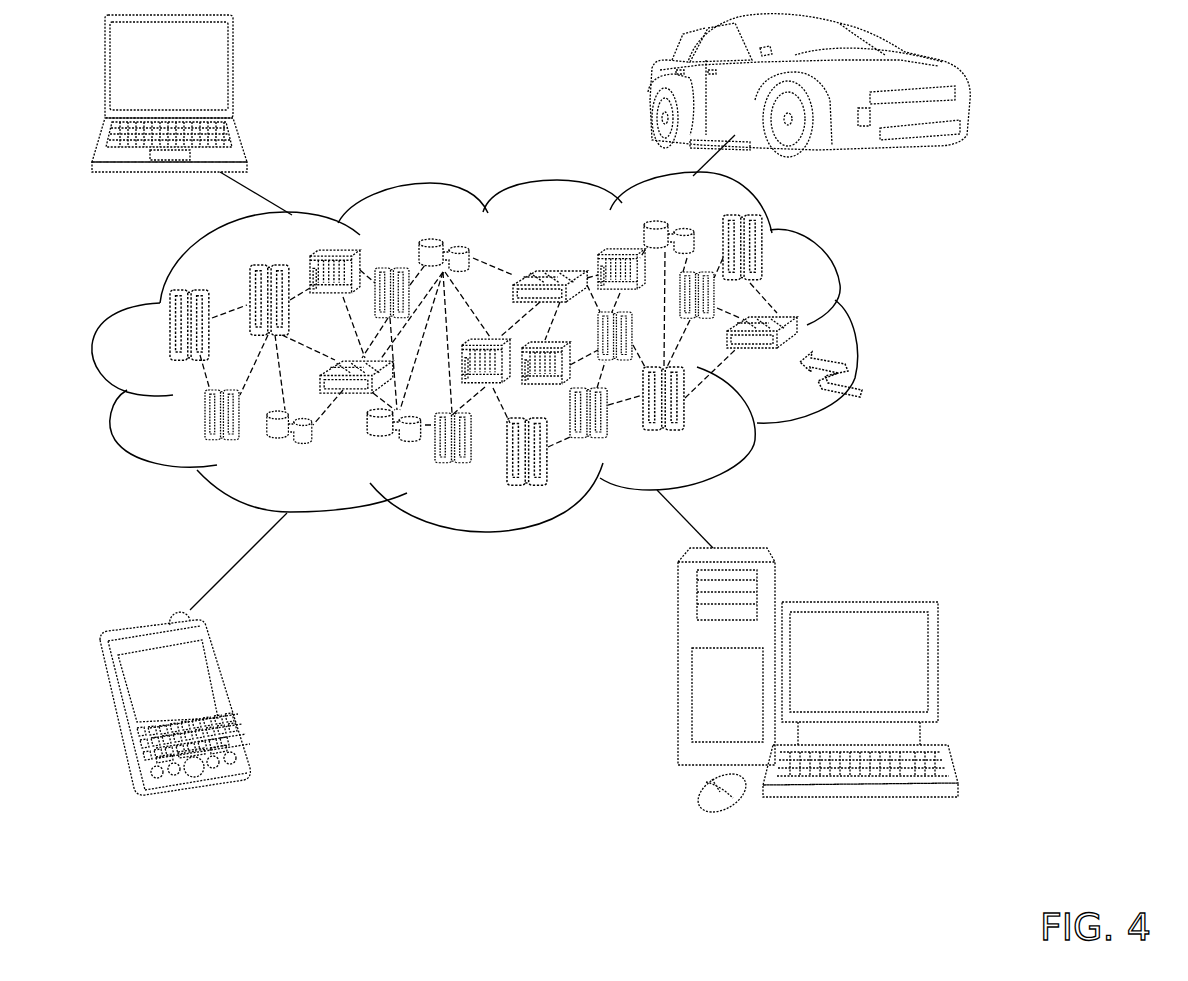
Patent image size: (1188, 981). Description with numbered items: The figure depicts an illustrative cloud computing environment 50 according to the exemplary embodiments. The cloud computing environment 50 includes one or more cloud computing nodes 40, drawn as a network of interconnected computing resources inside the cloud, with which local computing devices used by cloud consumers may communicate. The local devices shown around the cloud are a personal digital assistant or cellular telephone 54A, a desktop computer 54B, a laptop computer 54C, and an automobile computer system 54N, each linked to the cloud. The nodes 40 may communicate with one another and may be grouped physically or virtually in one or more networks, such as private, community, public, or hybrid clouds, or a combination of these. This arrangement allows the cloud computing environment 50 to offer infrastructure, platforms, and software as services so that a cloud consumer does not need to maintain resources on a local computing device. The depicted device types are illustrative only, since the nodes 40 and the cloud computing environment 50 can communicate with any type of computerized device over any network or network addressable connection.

The cloud computing environment 50 is at (855, 330).
The cloud computing nodes 40 is at (848, 377).
The personal digital assistant or cellular telephone 54A is at (227, 690).
The desktop computer 54B is at (857, 602).
The laptop computer 54C is at (233, 68).
The automobile computer system 54N is at (648, 88).